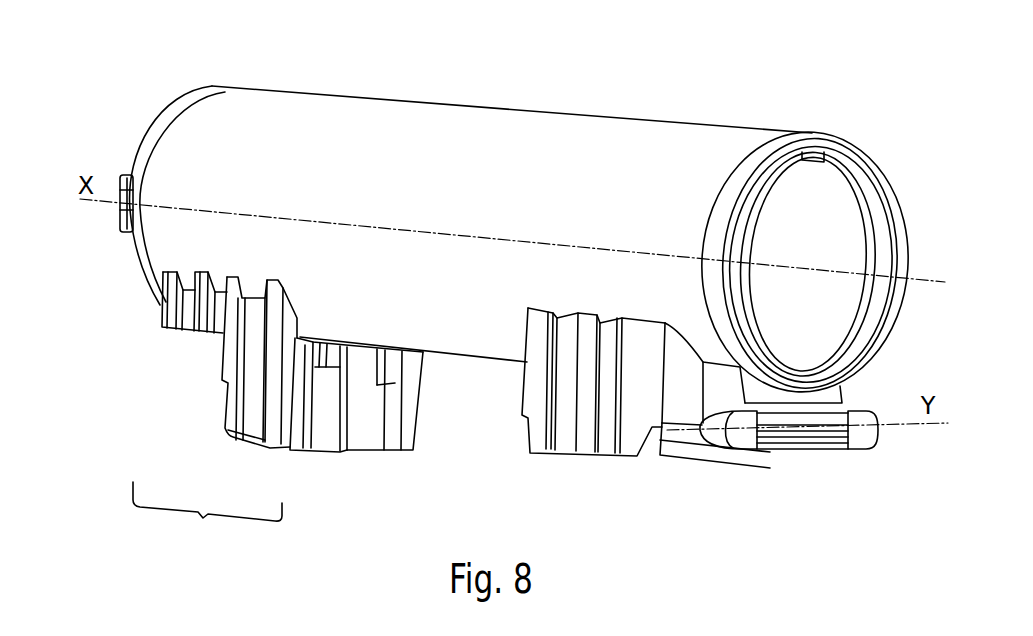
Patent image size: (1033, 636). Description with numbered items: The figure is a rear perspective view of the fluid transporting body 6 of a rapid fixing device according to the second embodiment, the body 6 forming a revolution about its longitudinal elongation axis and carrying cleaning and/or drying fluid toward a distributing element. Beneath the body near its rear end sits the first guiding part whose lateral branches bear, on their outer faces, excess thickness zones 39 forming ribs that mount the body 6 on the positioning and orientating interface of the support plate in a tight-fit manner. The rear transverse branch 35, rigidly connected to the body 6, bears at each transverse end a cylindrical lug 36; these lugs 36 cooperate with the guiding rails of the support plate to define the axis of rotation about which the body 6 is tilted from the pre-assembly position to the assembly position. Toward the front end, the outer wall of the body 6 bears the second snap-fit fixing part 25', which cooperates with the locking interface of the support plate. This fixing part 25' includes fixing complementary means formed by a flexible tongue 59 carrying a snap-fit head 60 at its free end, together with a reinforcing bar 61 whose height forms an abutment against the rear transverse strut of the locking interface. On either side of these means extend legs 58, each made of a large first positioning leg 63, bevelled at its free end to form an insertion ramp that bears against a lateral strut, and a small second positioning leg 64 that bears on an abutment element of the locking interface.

The fluid transporting body 6 is at (878, 122).
The second snap-fit fixing part 25' is at (102, 406).
The rear transverse branch 35 is at (820, 457).
The cylindrical lug 36 is at (750, 442).
The excess thickness zone 39 is at (590, 412).
The legs 58 is at (207, 523).
The flexible tongue 59 is at (335, 385).
The snap-fit head 60 is at (306, 445).
The reinforcing bar 61 is at (364, 420).
The first positioning leg 63 is at (250, 412).
The second positioning leg 64 is at (181, 352).